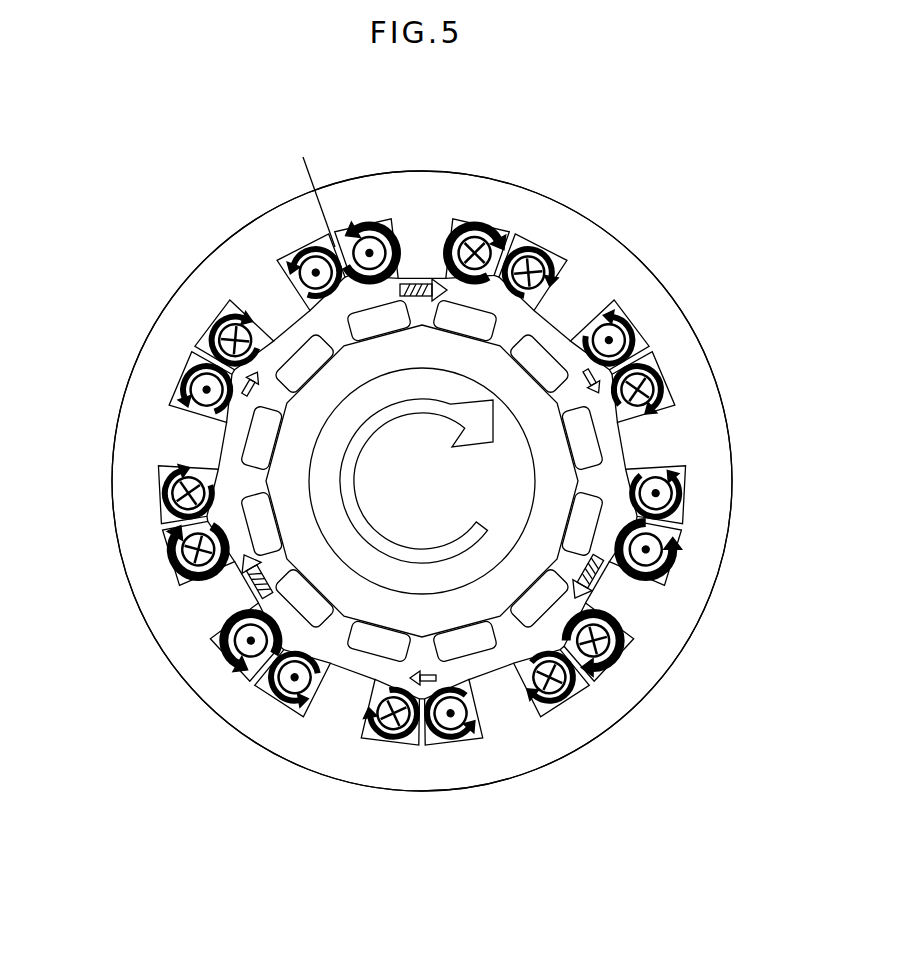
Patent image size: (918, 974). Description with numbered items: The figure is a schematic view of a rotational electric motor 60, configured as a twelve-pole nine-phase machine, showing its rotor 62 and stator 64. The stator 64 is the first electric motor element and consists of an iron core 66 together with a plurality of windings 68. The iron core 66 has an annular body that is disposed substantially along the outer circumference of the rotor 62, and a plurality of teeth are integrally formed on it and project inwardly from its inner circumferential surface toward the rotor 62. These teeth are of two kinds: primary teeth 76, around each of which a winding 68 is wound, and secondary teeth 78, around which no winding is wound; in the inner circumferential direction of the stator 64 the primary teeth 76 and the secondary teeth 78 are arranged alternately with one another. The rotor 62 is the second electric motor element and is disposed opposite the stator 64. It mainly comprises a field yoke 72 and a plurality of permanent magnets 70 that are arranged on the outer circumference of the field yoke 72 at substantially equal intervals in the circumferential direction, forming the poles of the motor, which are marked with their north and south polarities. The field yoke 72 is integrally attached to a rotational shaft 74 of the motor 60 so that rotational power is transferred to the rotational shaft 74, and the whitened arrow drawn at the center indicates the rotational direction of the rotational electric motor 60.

The rotational electric motor 60 is at (83, 208).
The rotor 62 is at (508, 660).
The stator 64 is at (688, 642).
The iron core 66 is at (202, 687).
The windings 68 is at (665, 562).
The permanent magnets 70 is at (545, 337).
The field yoke 72 is at (348, 607).
The rotational shaft 74 is at (380, 392).
The primary teeth 76 is at (422, 232).
The secondary teeth 78 is at (515, 232).